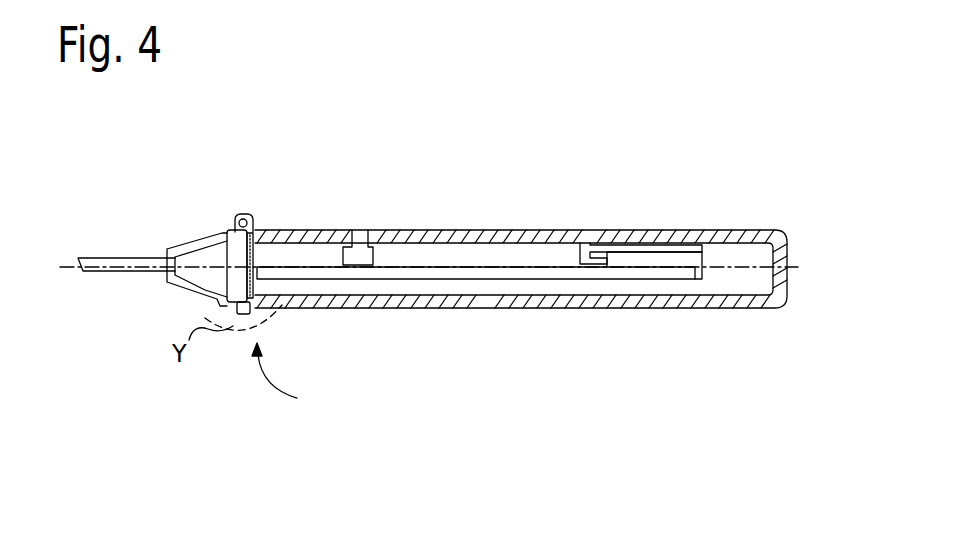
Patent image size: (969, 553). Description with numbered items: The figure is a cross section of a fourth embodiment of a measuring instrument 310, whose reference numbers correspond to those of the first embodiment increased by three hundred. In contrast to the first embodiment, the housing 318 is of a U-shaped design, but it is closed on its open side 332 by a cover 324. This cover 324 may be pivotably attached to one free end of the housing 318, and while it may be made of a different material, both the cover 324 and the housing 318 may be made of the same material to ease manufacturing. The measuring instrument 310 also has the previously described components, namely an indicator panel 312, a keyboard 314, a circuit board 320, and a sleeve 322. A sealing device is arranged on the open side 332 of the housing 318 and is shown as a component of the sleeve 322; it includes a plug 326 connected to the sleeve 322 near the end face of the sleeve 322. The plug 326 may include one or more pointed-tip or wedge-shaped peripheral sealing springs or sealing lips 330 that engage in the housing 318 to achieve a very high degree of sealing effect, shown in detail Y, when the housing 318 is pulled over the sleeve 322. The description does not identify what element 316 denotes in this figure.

The measuring instrument 310 is at (423, 83).
The indicator panel 312 is at (642, 252).
The keyboard 314 is at (355, 232).
The needle 316 is at (93, 272).
The housing 318 is at (481, 231).
The circuit board 320 is at (489, 274).
The sleeve 322 is at (288, 232).
The cover 324 is at (192, 268).
The plug 326 is at (242, 258).
The sealing lip 330 is at (253, 283).
The open side 332 is at (299, 377).